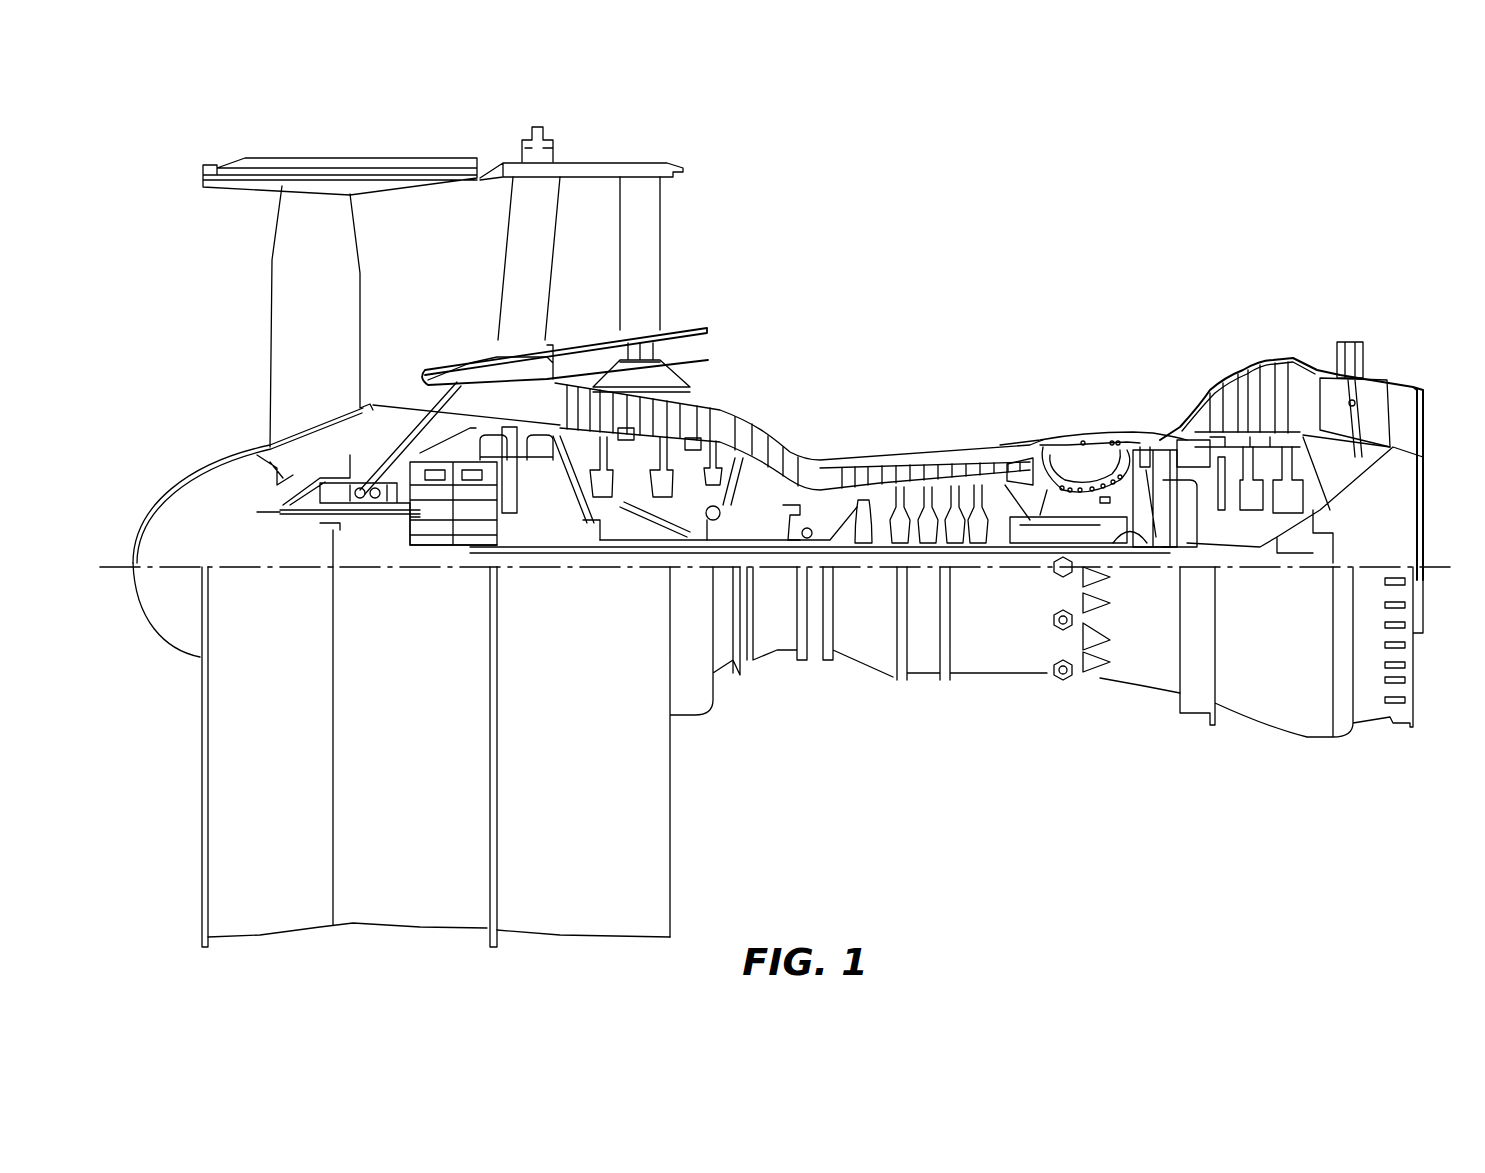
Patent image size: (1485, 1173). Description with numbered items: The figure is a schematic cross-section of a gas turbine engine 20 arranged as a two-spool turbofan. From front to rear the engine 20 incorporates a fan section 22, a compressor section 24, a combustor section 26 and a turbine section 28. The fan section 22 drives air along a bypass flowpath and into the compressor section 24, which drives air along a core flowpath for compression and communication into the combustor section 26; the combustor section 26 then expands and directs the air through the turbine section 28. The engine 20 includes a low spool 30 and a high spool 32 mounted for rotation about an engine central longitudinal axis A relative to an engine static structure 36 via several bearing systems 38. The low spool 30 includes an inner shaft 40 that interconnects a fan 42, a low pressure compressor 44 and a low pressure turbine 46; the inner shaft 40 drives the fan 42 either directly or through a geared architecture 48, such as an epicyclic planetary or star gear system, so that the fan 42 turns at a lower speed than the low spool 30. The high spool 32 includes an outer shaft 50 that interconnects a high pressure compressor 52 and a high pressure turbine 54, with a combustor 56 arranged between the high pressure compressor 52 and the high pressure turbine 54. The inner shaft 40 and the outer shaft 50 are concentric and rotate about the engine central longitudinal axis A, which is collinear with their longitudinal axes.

The gas turbine engine 20 is at (1137, 219).
The fan section 22 is at (497, 137).
The compressor section 24 is at (503, 300).
The combustor section 26 is at (1033, 305).
The turbine section 28 is at (1350, 307).
The low spool 30 is at (778, 508).
The high spool 32 is at (993, 475).
The engine static structure 36 is at (920, 680).
The bearing systems 38 is at (532, 643).
The inner shaft 40 is at (1117, 553).
The fan 42 is at (332, 314).
The low pressure compressor 44 is at (690, 409).
The low pressure turbine 46 is at (1260, 396).
The geared architecture 48 is at (450, 513).
The outer shaft 50 is at (1147, 543).
The high pressure compressor 52 is at (845, 473).
The high pressure turbine 54 is at (1150, 460).
The combustor 56 is at (1093, 467).
The engine central longitudinal axis A is at (1443, 565).